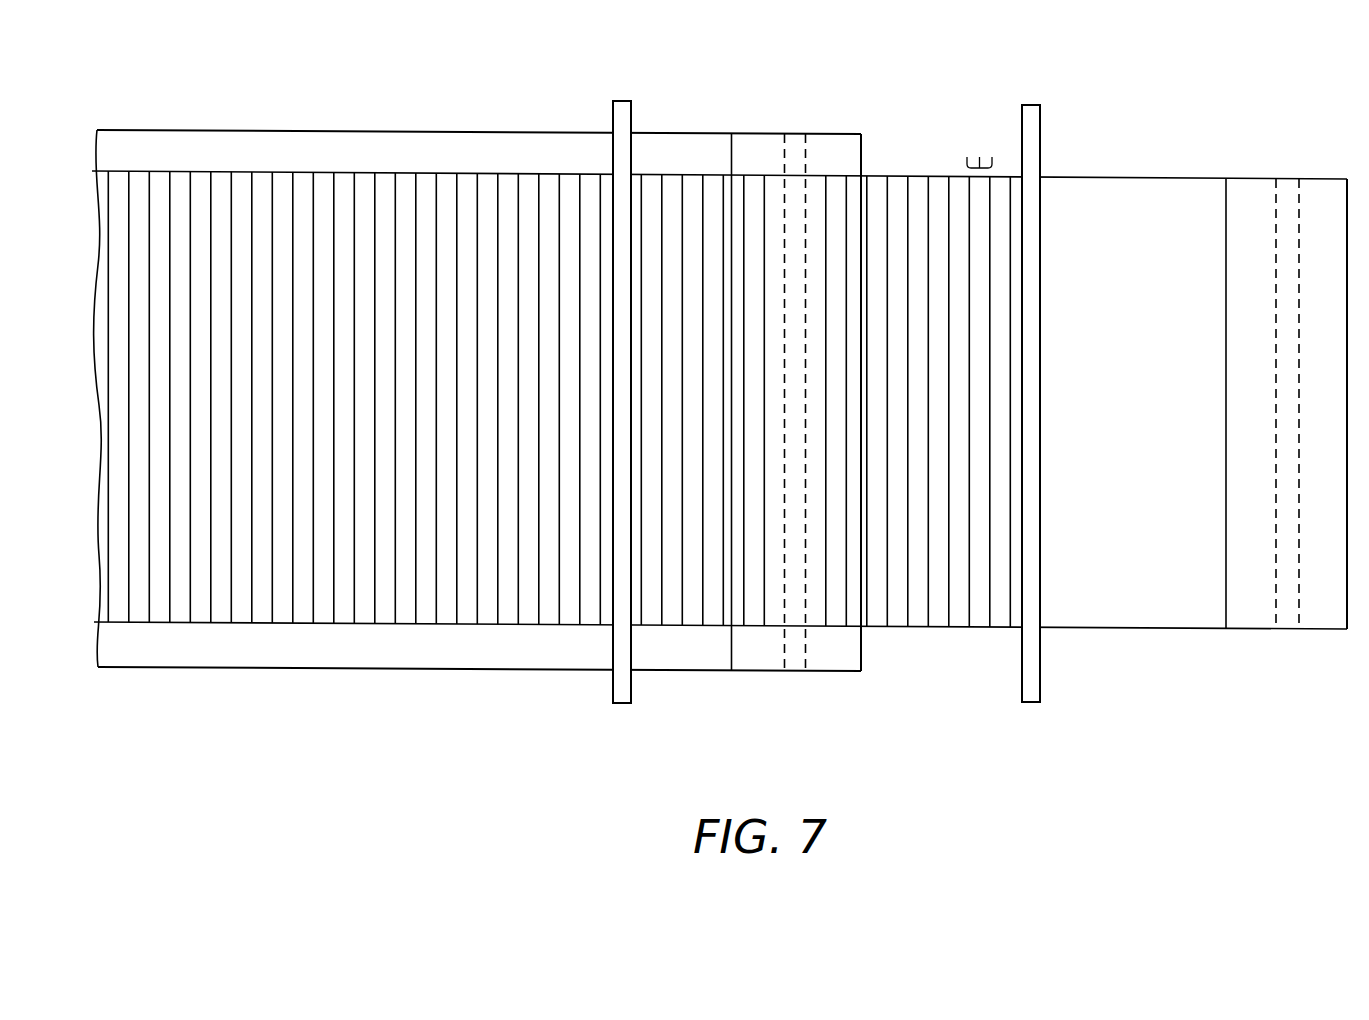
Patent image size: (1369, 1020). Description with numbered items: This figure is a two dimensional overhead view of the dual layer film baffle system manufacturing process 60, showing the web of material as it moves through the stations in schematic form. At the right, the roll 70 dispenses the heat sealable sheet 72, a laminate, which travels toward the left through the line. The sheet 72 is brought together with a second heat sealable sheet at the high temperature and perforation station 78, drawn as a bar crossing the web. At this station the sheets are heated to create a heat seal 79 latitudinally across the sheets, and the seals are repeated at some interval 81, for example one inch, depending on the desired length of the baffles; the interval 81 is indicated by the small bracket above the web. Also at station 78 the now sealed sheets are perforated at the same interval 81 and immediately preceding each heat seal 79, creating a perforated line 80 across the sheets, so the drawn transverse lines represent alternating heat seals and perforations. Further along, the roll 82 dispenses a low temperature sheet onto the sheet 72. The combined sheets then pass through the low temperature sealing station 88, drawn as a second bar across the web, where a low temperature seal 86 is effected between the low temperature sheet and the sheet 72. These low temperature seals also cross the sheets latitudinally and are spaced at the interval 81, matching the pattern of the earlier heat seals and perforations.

The dual layer film baffle system manufacturing process 60 is at (622, 68).
The roll 70 is at (1258, 630).
The heat sealable sheet 72 is at (1142, 630).
The high temperature and perforation station 78 is at (1030, 704).
The heat seal 79 is at (948, 612).
The perforated line 80 is at (948, 612).
The interval 81 is at (980, 157).
The roll 82 is at (770, 672).
The low temperature seal 86 is at (577, 630).
The low temperature sealing station 88 is at (615, 704).